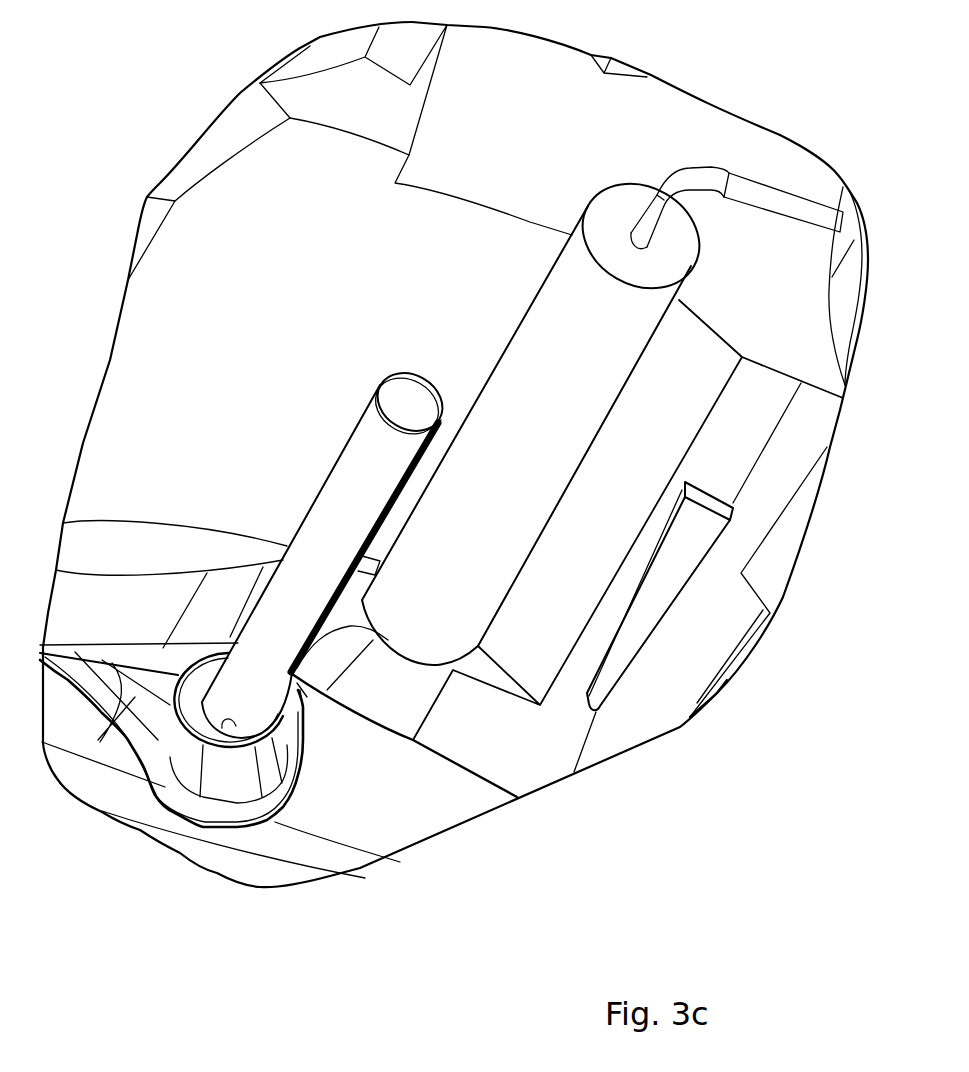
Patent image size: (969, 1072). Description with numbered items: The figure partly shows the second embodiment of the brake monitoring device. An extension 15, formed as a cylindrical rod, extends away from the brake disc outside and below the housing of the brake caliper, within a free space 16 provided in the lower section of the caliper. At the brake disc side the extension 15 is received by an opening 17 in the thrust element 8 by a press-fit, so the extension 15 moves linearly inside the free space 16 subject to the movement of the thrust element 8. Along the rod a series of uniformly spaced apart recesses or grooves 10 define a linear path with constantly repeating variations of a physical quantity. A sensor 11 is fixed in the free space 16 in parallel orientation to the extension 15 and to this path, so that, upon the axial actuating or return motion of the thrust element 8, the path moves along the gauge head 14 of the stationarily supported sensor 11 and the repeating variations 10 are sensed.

The thrust element 8 is at (225, 793).
The recesses or grooves 10 is at (363, 600).
The sensor 11 is at (600, 351).
The gauge head 14 is at (380, 563).
The extension 15 is at (323, 503).
The free space 16 is at (232, 376).
The opening 17 is at (234, 722).